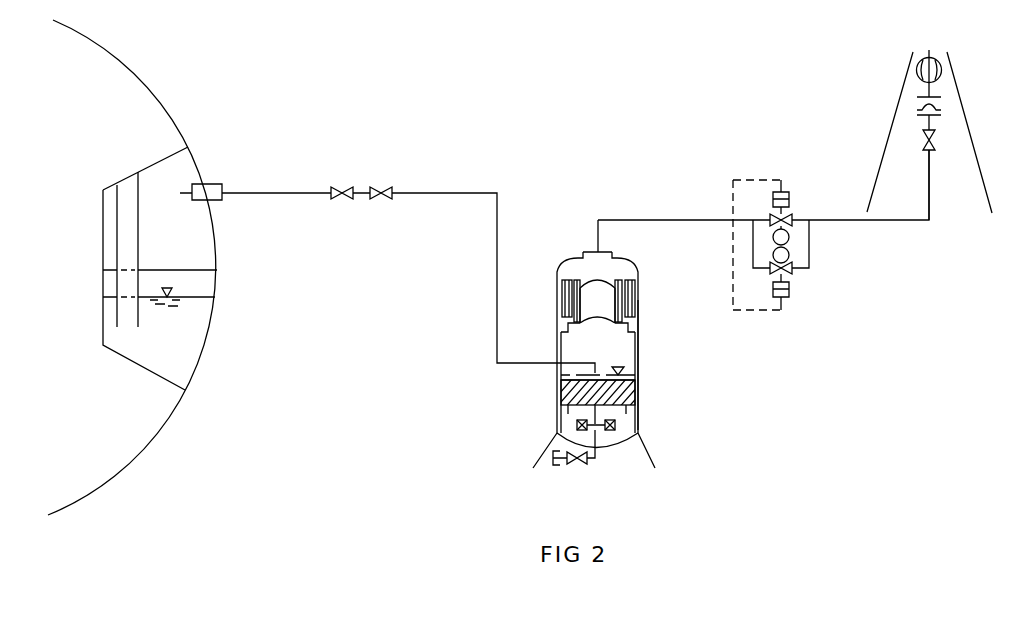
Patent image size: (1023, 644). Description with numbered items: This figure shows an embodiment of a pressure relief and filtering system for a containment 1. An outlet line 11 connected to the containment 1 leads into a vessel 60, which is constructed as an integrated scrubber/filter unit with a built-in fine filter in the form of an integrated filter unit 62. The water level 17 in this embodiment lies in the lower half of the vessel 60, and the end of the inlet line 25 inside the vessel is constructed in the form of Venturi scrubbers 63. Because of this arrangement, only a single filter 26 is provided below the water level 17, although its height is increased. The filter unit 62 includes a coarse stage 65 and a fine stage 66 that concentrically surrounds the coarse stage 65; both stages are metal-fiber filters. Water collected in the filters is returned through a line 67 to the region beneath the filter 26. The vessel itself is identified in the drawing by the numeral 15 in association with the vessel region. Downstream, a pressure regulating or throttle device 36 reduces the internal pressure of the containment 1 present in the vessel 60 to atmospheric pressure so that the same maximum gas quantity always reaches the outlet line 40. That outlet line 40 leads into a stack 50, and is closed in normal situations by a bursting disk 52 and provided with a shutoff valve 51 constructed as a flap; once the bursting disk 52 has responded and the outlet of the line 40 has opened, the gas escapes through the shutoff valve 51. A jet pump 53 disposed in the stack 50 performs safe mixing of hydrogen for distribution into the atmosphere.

The containment 1 is at (128, 70).
The outlet line 11 is at (267, 193).
The reaction vessel 15 is at (628, 425).
The water level 17 is at (575, 365).
The inlet line 25 is at (595, 414).
The filter 26 is at (636, 397).
The pressure regulating or throttle device 36 is at (789, 198).
The outlet line 40 is at (847, 220).
The stack 50 is at (978, 165).
The shutoff valve 51 is at (935, 131).
The bursting disk 52 is at (938, 100).
The jet pump 53 is at (916, 66).
The vessel 60 is at (688, 375).
The integrated filter unit 62 is at (627, 296).
The Venturi scrubbers 63 is at (583, 431).
The coarse stage 65 is at (580, 286).
The fine stage 66 is at (565, 297).
The line 67 is at (639, 346).